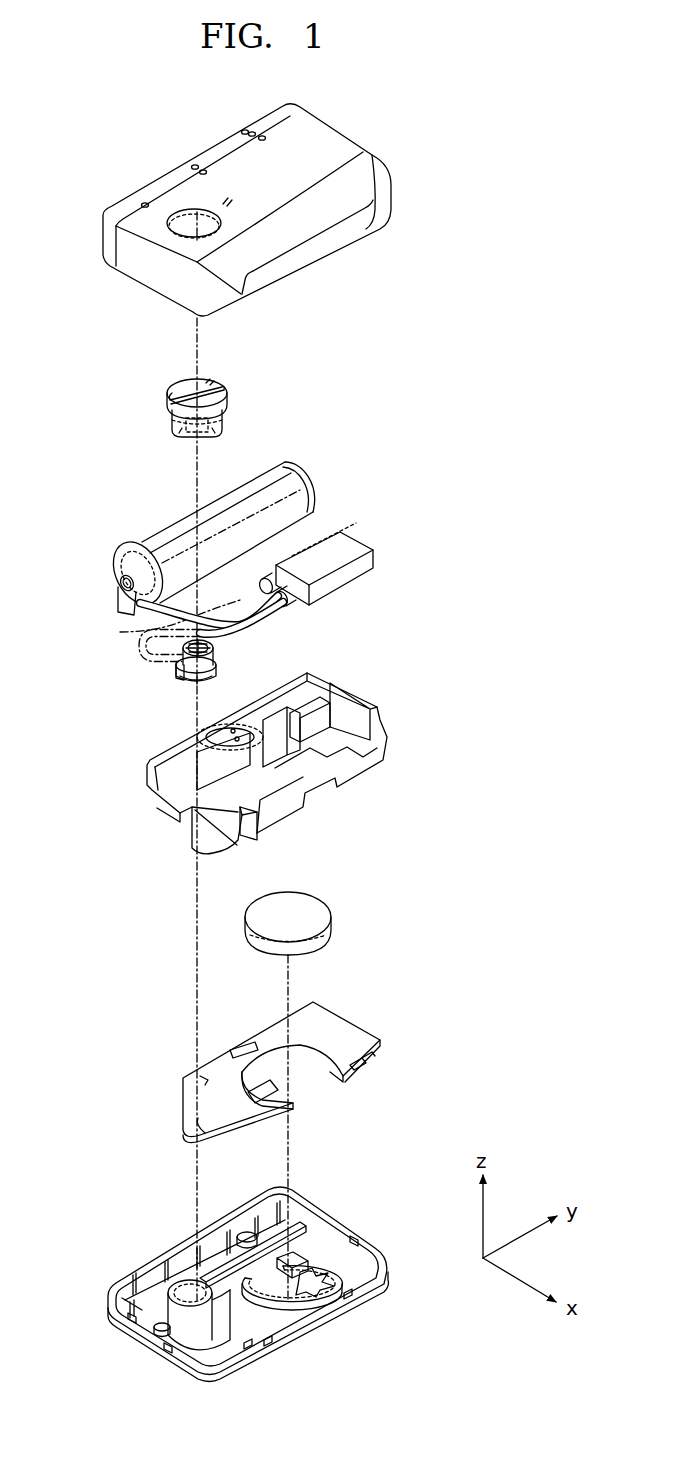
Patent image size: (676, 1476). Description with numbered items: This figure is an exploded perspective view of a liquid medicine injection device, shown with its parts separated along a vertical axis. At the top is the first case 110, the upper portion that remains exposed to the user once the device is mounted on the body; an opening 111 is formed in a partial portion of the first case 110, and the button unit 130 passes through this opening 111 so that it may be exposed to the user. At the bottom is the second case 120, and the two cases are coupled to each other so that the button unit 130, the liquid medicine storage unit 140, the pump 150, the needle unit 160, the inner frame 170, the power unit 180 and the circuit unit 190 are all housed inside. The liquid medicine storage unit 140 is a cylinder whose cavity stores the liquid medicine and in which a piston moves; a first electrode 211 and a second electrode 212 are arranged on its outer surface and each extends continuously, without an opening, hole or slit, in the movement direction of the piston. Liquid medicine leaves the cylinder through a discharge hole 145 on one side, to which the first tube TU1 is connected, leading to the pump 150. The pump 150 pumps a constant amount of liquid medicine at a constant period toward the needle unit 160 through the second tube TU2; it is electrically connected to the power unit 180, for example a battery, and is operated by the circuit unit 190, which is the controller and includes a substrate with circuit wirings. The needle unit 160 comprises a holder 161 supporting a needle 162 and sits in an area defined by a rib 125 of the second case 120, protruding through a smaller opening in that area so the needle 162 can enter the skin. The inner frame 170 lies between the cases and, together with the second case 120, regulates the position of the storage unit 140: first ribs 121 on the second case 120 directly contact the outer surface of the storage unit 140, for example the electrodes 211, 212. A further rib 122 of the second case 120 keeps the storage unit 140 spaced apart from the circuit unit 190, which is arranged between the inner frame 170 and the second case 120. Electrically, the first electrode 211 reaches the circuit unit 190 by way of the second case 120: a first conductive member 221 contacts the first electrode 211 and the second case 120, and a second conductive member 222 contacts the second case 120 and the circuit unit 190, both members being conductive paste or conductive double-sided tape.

The first case 110 is at (247, 194).
The opening 111 is at (183, 225).
The second case 120 is at (235, 1270).
The first ribs 121 is at (137, 1297).
The rib 122 is at (133, 1315).
The rib 125 is at (180, 1330).
The button unit 130 is at (170, 410).
The liquid medicine storage unit 140 is at (218, 506).
The first electrode 211 is at (143, 537).
The second electrode 212 is at (300, 490).
The discharge hole 145 is at (133, 612).
The pump 150 is at (350, 545).
The first tube TU1 is at (160, 615).
The second tube TU2 is at (265, 617).
The needle unit 160 is at (240, 680).
The holder 161 is at (217, 672).
The needle 162 is at (190, 690).
The inner frame 170 is at (387, 745).
The power unit 180 is at (333, 925).
The circuit unit 190 is at (347, 1027).
The first conductive member 221 is at (255, 1243).
The second conductive member 222 is at (298, 1223).